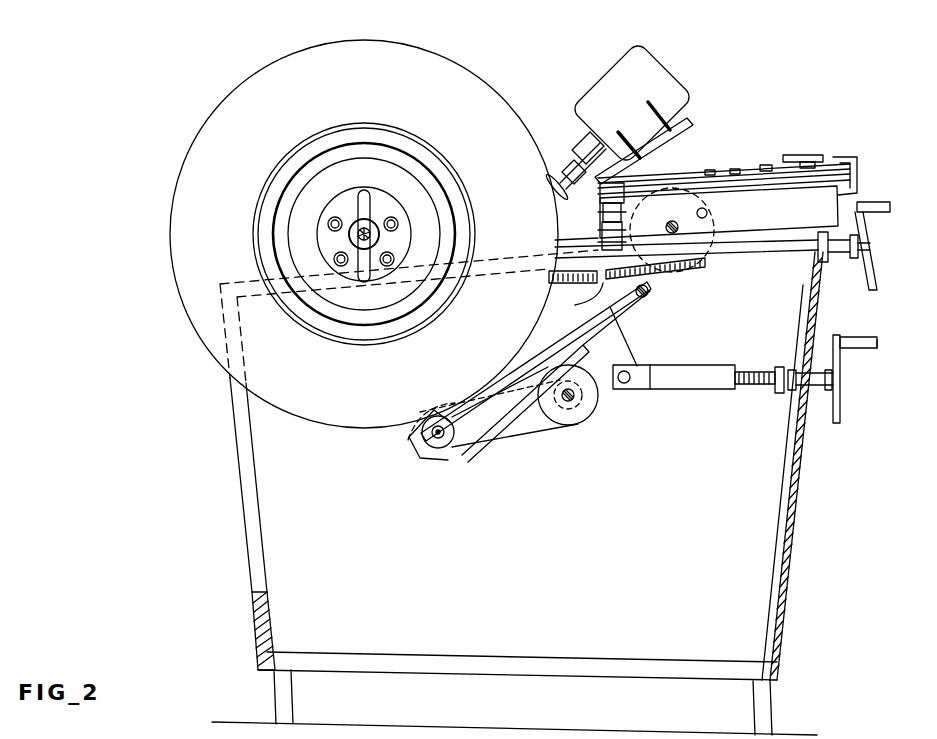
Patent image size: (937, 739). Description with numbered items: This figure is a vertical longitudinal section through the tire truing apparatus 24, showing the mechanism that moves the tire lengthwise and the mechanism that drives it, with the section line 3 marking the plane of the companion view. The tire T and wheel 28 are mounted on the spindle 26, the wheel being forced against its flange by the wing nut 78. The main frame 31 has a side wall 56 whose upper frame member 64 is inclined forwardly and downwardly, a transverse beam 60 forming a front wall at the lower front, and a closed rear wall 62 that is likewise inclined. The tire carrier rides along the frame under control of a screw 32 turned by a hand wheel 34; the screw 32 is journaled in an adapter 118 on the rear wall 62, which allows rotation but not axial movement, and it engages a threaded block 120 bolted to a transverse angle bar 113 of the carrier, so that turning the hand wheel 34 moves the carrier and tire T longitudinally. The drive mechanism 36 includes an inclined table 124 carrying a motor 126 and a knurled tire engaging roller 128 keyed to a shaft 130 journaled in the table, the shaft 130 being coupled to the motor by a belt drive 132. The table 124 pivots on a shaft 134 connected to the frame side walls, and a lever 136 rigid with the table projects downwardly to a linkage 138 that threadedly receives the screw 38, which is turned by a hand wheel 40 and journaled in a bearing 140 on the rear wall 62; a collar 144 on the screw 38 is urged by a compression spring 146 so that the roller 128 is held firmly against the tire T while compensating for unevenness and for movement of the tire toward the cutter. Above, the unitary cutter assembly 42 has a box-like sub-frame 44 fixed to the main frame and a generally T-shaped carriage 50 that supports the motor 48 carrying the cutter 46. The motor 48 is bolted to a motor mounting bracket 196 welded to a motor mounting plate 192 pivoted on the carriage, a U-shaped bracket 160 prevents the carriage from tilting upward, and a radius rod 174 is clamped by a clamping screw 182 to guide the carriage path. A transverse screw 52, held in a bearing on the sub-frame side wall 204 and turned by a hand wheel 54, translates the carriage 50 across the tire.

The tire T is at (291, 115).
The section line 3- 3 is at (368, 130).
The tire truing apparatus 24 is at (160, 308).
The spindle 26 is at (375, 238).
The wheel 28 is at (292, 197).
The main frame 31 is at (253, 633).
The screw 32 is at (717, 262).
The hand wheel 34 is at (872, 290).
The drive mechanism 36 is at (504, 440).
The screw 38 is at (751, 385).
The hand wheel 40 is at (838, 413).
The unitary cutter assembly 42 is at (836, 146).
The sub-frame 44 is at (829, 222).
The cutter 46 is at (547, 190).
The motor 48 is at (600, 102).
The carriage 50 is at (764, 171).
The screw 52 is at (656, 227).
The hand wheel 54 is at (771, 262).
The side wall 56 is at (575, 557).
The transverse beam 60 is at (250, 594).
The rear wall 62 is at (800, 482).
The upper frame member 64 is at (250, 283).
The wing nut 78 is at (364, 283).
The transverse angle bar 113 is at (571, 305).
The adapter 118 is at (828, 260).
The threaded block 120 is at (552, 290).
The inclined table 124 is at (621, 316).
The motor 126 is at (590, 403).
The knurled tire engaging roller 128 is at (441, 456).
The shaft 130 is at (460, 452).
The belt drive 132 is at (527, 428).
The shaft 134 is at (656, 299).
The lever 136 is at (620, 345).
The linkage 138 is at (690, 389).
The bearing 140 is at (800, 393).
The collar 144 is at (774, 366).
The compression spring 146 is at (791, 365).
The U-shaped bracket 160 is at (855, 165).
The radius rod 174 is at (776, 170).
The clamping screw 182 is at (822, 154).
The motor mounting plate 192 is at (697, 134).
The motor mounting bracket 196 is at (695, 168).
The side wall 204 is at (757, 250).